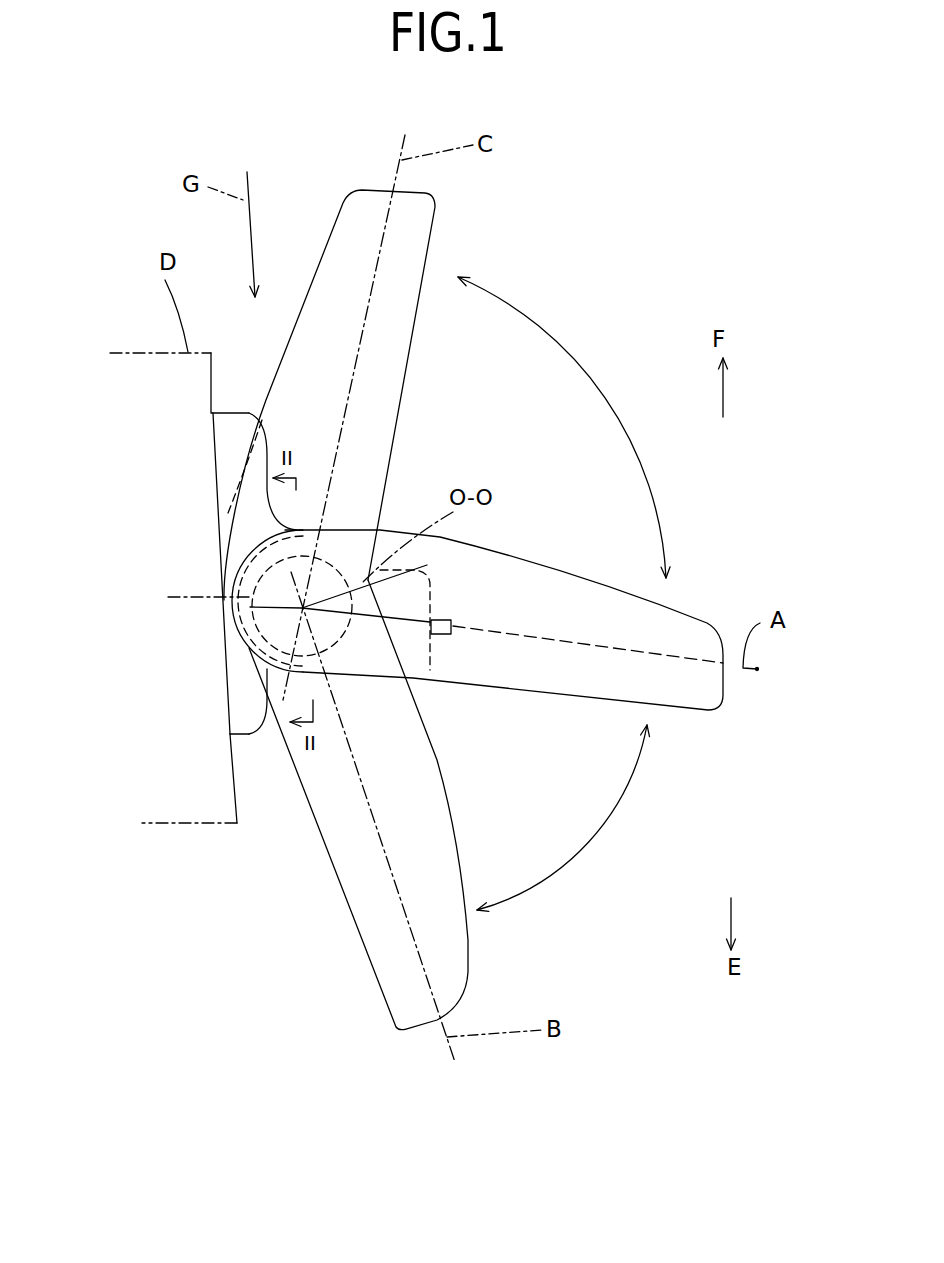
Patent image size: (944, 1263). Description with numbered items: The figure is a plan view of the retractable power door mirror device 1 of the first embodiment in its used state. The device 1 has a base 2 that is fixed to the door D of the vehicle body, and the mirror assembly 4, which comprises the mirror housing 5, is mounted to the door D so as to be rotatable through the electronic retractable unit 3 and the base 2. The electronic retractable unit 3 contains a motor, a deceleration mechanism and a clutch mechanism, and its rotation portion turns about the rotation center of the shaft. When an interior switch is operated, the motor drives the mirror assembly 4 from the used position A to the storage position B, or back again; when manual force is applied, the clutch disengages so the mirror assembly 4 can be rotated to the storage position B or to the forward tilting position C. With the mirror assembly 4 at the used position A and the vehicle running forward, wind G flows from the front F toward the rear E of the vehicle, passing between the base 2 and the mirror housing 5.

The retractable power door mirror device 1 is at (598, 293).
The base 2 is at (235, 411).
The electronic retractable unit 3 is at (430, 670).
The mirror assembly 4 is at (356, 190).
The mirror housing 5 is at (553, 572).